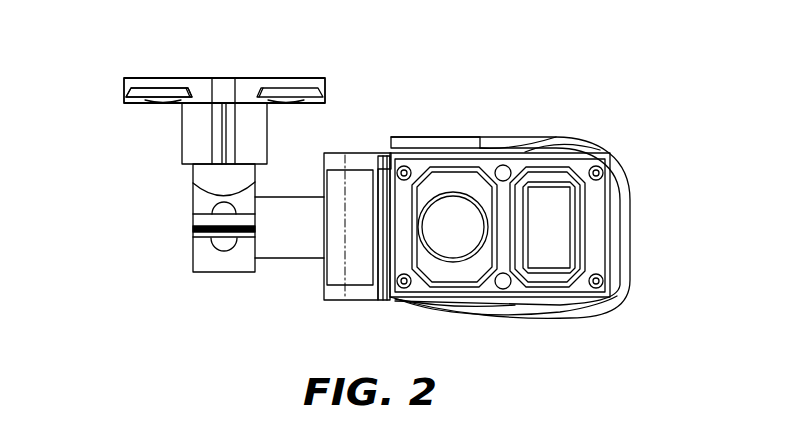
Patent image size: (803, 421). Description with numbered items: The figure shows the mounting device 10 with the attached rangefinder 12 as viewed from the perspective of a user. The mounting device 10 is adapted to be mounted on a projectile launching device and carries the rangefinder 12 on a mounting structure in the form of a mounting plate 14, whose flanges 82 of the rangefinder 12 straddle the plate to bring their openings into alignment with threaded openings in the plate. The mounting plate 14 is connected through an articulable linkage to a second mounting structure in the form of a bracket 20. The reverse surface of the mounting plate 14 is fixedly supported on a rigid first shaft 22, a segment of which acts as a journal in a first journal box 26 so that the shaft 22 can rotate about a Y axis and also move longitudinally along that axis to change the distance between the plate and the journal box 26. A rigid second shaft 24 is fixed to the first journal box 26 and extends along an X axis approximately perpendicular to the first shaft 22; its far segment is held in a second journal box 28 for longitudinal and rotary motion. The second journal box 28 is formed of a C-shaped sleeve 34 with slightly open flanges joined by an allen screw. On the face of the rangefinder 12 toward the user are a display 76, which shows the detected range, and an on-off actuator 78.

The mounting device 10 is at (180, 264).
The rangefinder 12 is at (562, 120).
The mounting plate 14 is at (316, 176).
The bracket 20 is at (288, 78).
The first shaft 22 is at (286, 262).
The second shaft 24 is at (223, 175).
The first journal box 26 is at (186, 229).
The second journal box 28 is at (176, 137).
The C-shaped sleeve 34 is at (182, 120).
The display 76 is at (552, 205).
The on-off actuator 78 is at (450, 223).
The flanges 82 is at (364, 158).